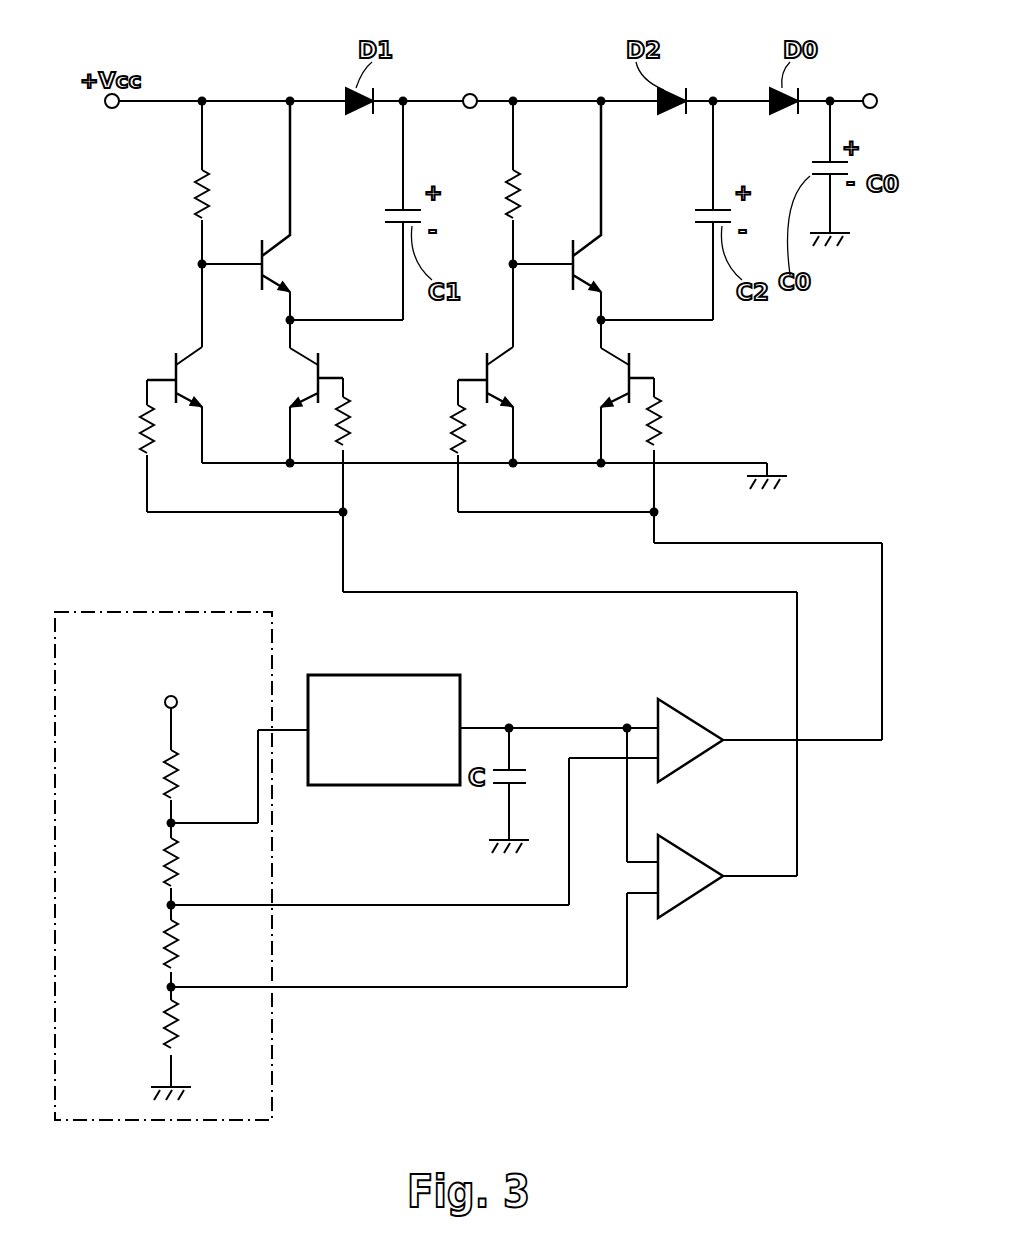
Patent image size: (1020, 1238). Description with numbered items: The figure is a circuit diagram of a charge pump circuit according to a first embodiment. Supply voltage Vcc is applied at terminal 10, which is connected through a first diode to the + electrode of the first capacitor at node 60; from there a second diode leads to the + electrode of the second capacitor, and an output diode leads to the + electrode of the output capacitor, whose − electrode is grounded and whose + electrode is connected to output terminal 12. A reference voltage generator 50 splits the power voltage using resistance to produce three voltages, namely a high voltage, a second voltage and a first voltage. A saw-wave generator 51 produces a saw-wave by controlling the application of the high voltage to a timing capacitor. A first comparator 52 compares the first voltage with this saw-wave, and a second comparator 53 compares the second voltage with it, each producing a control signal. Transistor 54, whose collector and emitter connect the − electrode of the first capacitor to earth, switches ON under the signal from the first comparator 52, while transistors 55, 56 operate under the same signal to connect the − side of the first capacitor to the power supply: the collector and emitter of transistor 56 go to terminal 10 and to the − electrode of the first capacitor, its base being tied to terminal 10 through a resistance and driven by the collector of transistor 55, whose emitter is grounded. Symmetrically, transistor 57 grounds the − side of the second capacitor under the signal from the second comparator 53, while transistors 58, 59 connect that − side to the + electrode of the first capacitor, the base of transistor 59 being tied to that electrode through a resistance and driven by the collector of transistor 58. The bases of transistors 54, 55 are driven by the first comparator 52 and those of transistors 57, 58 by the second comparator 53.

The terminal 10 is at (110, 109).
The output terminal 12 is at (872, 110).
The intermediate node 60 is at (472, 92).
The reference voltage generator 50 is at (273, 1080).
The saw-wave generator 51 is at (396, 673).
The first comparator 52 is at (706, 860).
The second comparator 53 is at (700, 752).
The transistor 54 is at (296, 362).
The transistor 55 is at (176, 400).
The transistor 56 is at (262, 276).
The transistor 57 is at (666, 369).
The transistor 58 is at (485, 401).
The transistor 59 is at (573, 196).